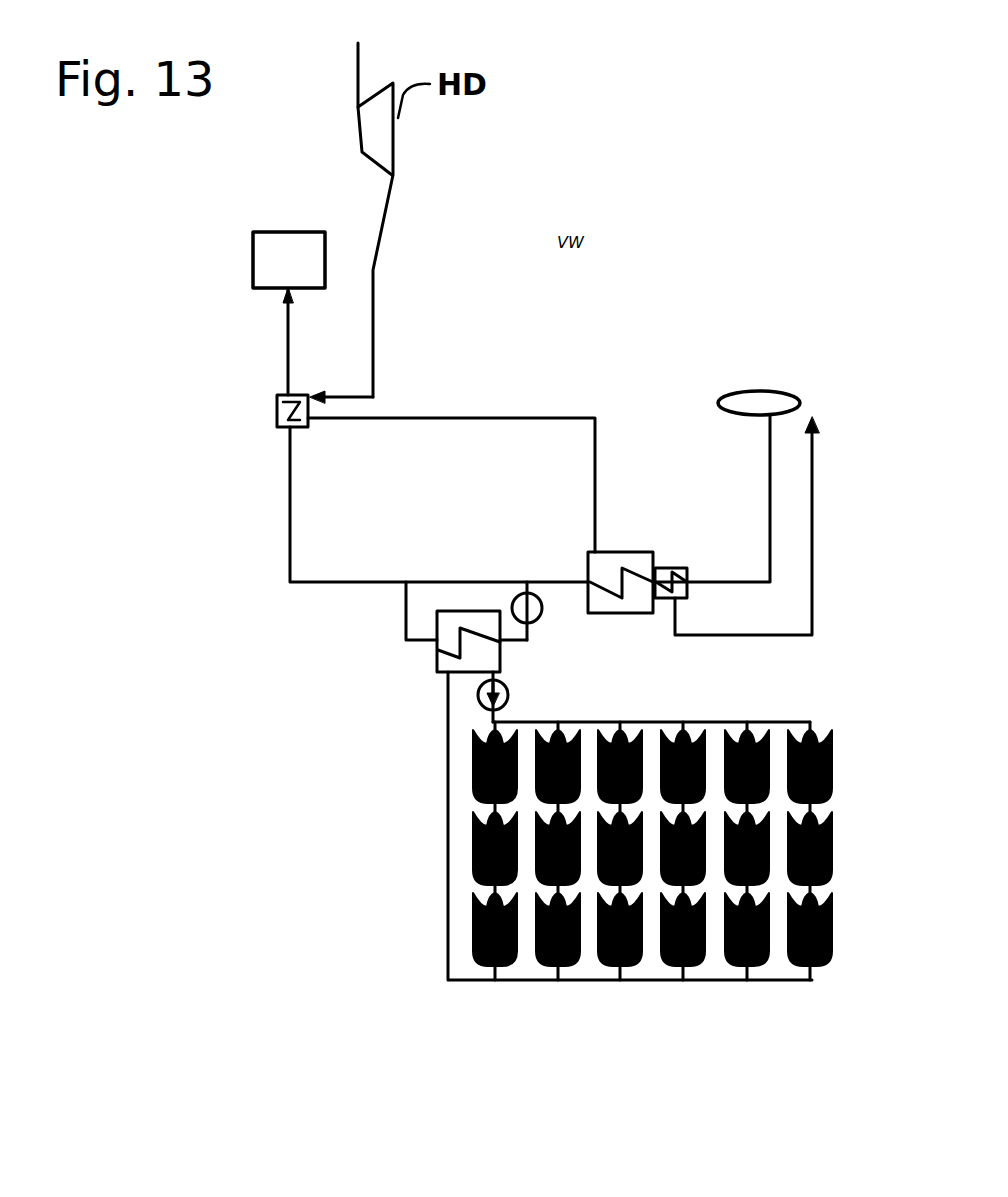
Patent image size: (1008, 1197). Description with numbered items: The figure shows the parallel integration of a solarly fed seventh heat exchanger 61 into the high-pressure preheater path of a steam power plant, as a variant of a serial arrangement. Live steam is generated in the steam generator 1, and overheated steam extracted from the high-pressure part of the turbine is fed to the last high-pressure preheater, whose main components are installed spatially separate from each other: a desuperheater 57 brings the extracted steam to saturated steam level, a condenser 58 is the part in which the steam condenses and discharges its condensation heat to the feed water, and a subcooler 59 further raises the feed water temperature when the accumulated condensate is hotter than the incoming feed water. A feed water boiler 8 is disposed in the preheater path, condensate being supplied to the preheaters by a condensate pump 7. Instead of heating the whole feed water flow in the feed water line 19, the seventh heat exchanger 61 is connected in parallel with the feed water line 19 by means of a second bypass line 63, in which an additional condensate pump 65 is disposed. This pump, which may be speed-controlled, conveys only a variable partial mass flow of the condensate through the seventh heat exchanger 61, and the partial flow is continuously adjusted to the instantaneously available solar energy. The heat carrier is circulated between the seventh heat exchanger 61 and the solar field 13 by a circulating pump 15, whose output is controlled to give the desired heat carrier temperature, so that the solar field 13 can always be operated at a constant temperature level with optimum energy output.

The steam generator 1 is at (280, 250).
The condensate pump 7 is at (550, 348).
The feed water boiler 8 is at (795, 400).
The solar field 13 is at (412, 928).
The circulating pump 15 is at (510, 688).
The feed water line 19 is at (292, 502).
The desuperheater 57 is at (276, 425).
The condenser 58 is at (612, 555).
The subcooler 59 is at (675, 568).
The seventh heat exchanger 61 is at (437, 668).
The second bypass line 63 is at (404, 612).
The additional condensate pump 65 is at (532, 625).